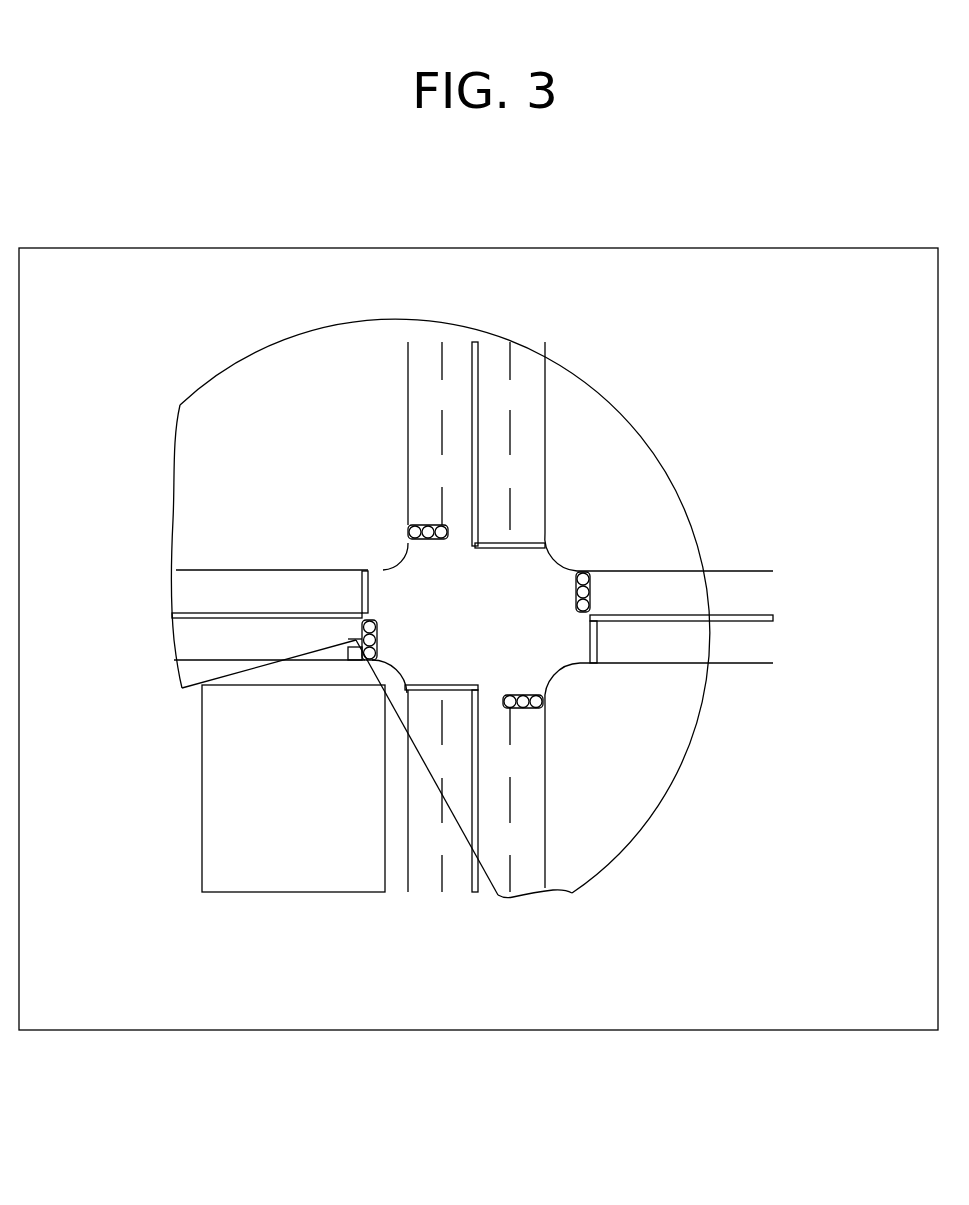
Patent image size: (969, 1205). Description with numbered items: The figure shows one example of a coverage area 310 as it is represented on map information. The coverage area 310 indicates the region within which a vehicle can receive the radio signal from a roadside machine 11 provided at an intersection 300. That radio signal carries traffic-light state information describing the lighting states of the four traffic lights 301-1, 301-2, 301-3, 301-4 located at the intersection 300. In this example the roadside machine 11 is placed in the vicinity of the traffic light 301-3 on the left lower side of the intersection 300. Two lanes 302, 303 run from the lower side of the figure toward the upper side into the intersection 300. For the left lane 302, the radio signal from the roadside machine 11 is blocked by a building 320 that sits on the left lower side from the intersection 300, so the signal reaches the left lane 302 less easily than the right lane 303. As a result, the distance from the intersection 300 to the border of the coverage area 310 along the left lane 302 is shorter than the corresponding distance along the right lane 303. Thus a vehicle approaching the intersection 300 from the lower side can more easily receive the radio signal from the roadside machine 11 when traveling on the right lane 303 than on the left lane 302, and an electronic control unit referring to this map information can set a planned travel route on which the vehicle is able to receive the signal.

The roadside machine 11 is at (353, 640).
The intersection 300 is at (400, 575).
The traffic light 301-1 is at (427, 524).
The traffic light 301-2 is at (586, 571).
The traffic light 301-3 is at (378, 657).
The traffic light 301-4 is at (543, 703).
The left lane 302 is at (425, 873).
The right lane 303 is at (457, 873).
The coverage area 310 is at (687, 527).
The building 320 is at (257, 873).